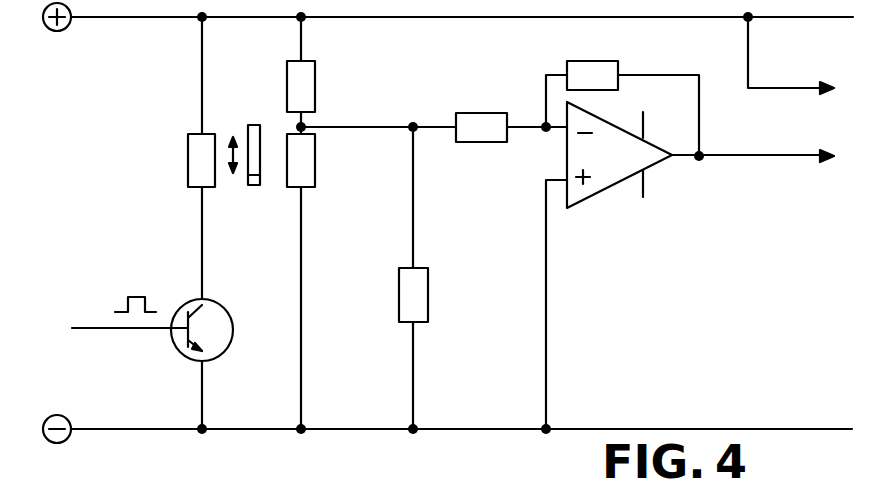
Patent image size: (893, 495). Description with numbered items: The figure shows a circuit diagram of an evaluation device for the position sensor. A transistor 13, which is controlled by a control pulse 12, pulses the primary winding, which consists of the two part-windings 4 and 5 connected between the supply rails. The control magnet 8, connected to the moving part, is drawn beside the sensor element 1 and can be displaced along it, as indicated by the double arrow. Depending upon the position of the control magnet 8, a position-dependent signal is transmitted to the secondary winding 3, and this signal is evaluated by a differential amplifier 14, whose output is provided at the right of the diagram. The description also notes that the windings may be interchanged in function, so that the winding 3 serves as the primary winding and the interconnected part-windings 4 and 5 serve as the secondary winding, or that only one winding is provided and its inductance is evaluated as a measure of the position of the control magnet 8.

The measuring element / sensor 1 is at (250, 129).
The secondary winding 3 is at (306, 145).
The part-winding 4 is at (166, 160).
The part-winding 5 is at (203, 158).
The control magnet 8 is at (252, 187).
The control pulse 12 is at (135, 287).
The transistor 13 is at (218, 325).
The differential amplifier 14 is at (610, 170).